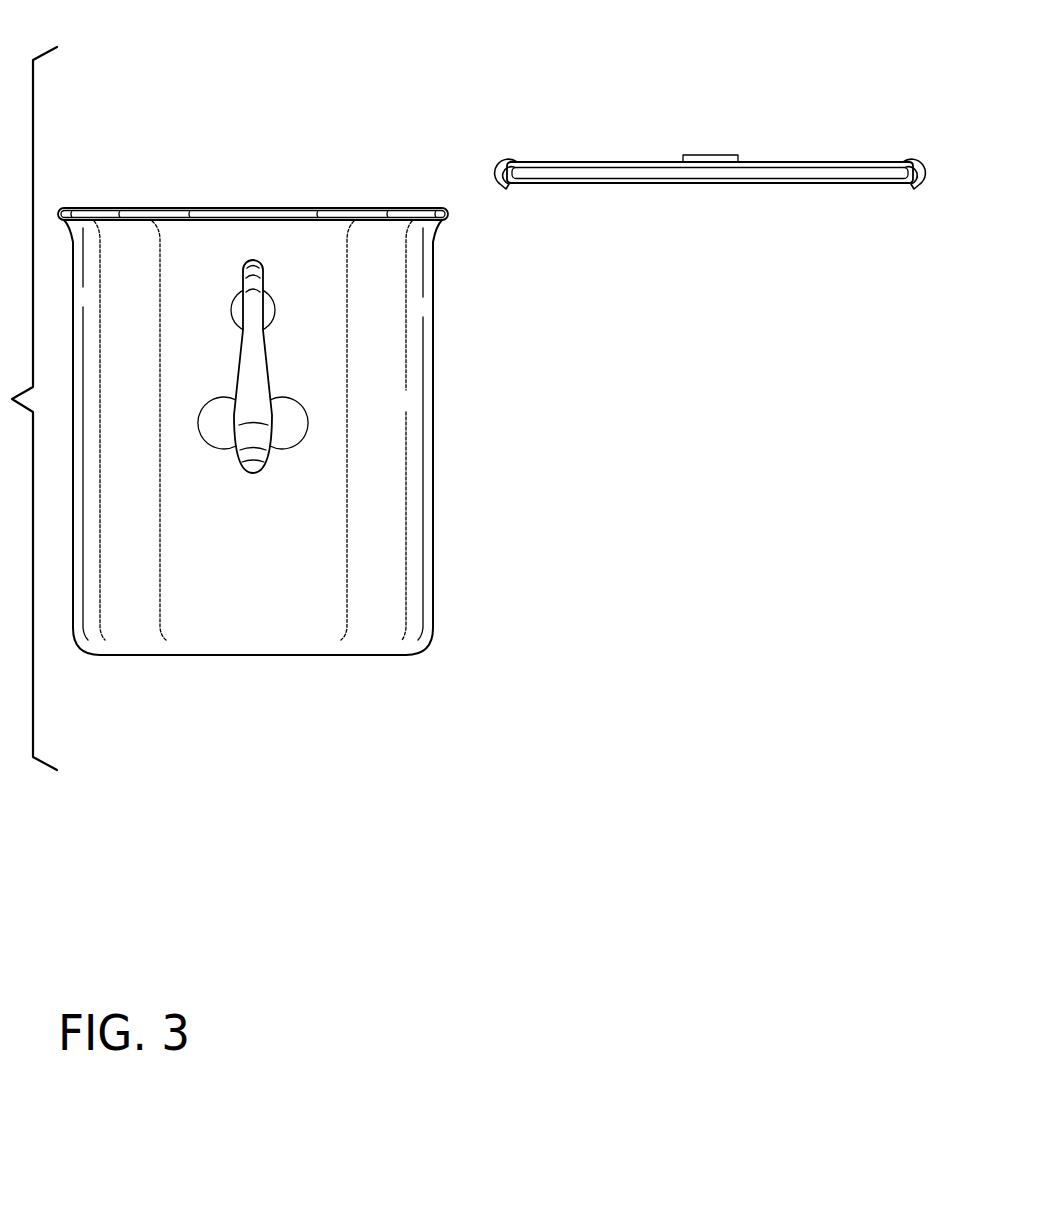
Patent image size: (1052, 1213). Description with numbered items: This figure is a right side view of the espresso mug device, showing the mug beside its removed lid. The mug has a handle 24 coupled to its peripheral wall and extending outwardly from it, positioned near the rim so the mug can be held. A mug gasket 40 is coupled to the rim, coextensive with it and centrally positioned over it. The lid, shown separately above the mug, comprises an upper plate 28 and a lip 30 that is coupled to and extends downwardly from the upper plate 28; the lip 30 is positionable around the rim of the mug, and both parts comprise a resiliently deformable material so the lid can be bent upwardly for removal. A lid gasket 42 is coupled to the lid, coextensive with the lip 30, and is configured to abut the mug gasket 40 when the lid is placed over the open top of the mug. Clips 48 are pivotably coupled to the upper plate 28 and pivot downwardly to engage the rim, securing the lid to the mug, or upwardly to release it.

The handle 24 is at (255, 383).
The upper plate 28 is at (520, 162).
The lip 30 is at (912, 162).
The mug gasket 40 is at (390, 208).
The lid gasket 42 is at (578, 208).
The clip 48 is at (505, 190).